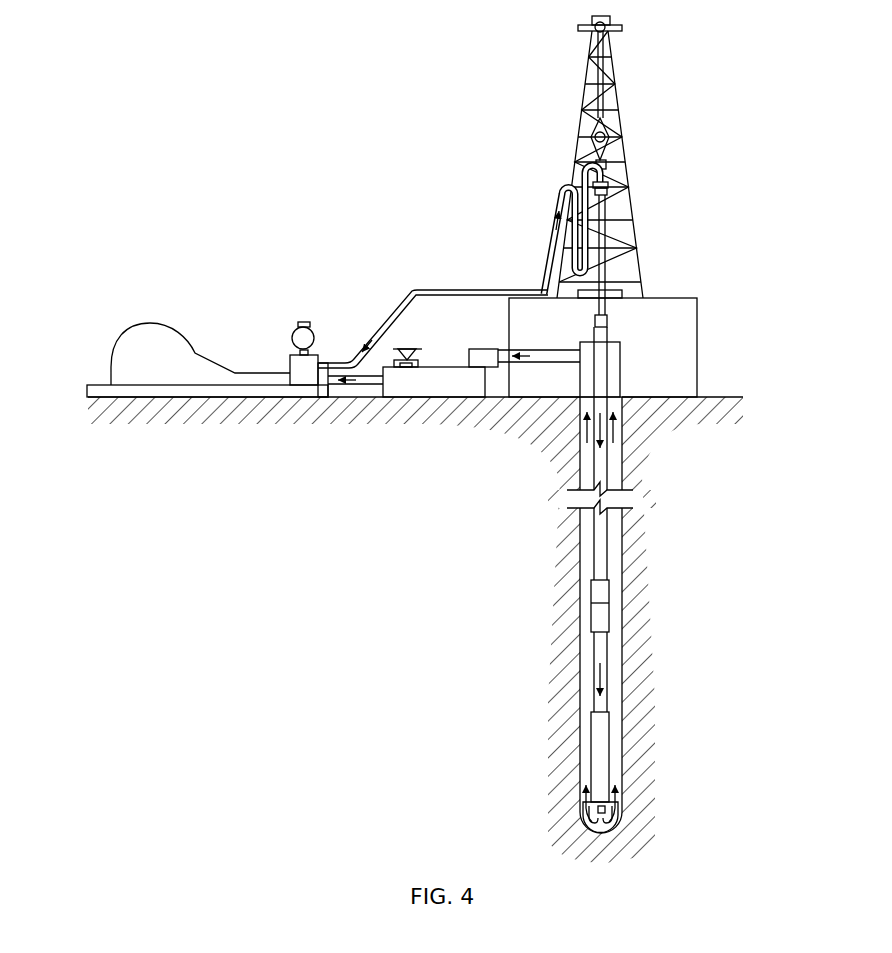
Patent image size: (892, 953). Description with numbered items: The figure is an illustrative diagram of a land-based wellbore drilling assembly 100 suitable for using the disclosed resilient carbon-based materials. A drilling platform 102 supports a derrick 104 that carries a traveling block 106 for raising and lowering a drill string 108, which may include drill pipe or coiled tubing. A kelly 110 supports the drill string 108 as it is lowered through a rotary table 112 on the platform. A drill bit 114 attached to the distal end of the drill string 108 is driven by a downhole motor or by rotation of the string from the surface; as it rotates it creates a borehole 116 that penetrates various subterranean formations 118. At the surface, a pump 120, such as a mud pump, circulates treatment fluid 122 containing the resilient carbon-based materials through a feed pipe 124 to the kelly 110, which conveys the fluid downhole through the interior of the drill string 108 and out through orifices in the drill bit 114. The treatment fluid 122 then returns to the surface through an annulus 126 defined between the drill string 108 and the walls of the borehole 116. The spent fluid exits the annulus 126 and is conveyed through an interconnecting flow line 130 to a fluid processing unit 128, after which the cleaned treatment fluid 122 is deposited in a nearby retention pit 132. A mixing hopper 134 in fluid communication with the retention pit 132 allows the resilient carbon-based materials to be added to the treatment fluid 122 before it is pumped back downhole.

The wellbore drilling assembly 100 is at (383, 80).
The drilling platform 102 is at (700, 312).
The derrick 104 is at (618, 96).
The traveling block 106 is at (611, 130).
The drill string 108 is at (600, 480).
The kelly 110 is at (603, 227).
The rotary table 112 is at (622, 294).
The drill bit 114 is at (620, 810).
The borehole 116 is at (622, 550).
The subterranean formations 118 is at (495, 580).
The pump 120 is at (163, 369).
The treatment fluid 122 is at (347, 362).
The feed pipe 124 is at (410, 288).
The annulus 126 is at (612, 676).
The fluid processing unit 128 is at (485, 349).
The interconnecting flow line 130 is at (565, 363).
The retention pit 132 is at (446, 388).
The mixing hopper 134 is at (399, 368).